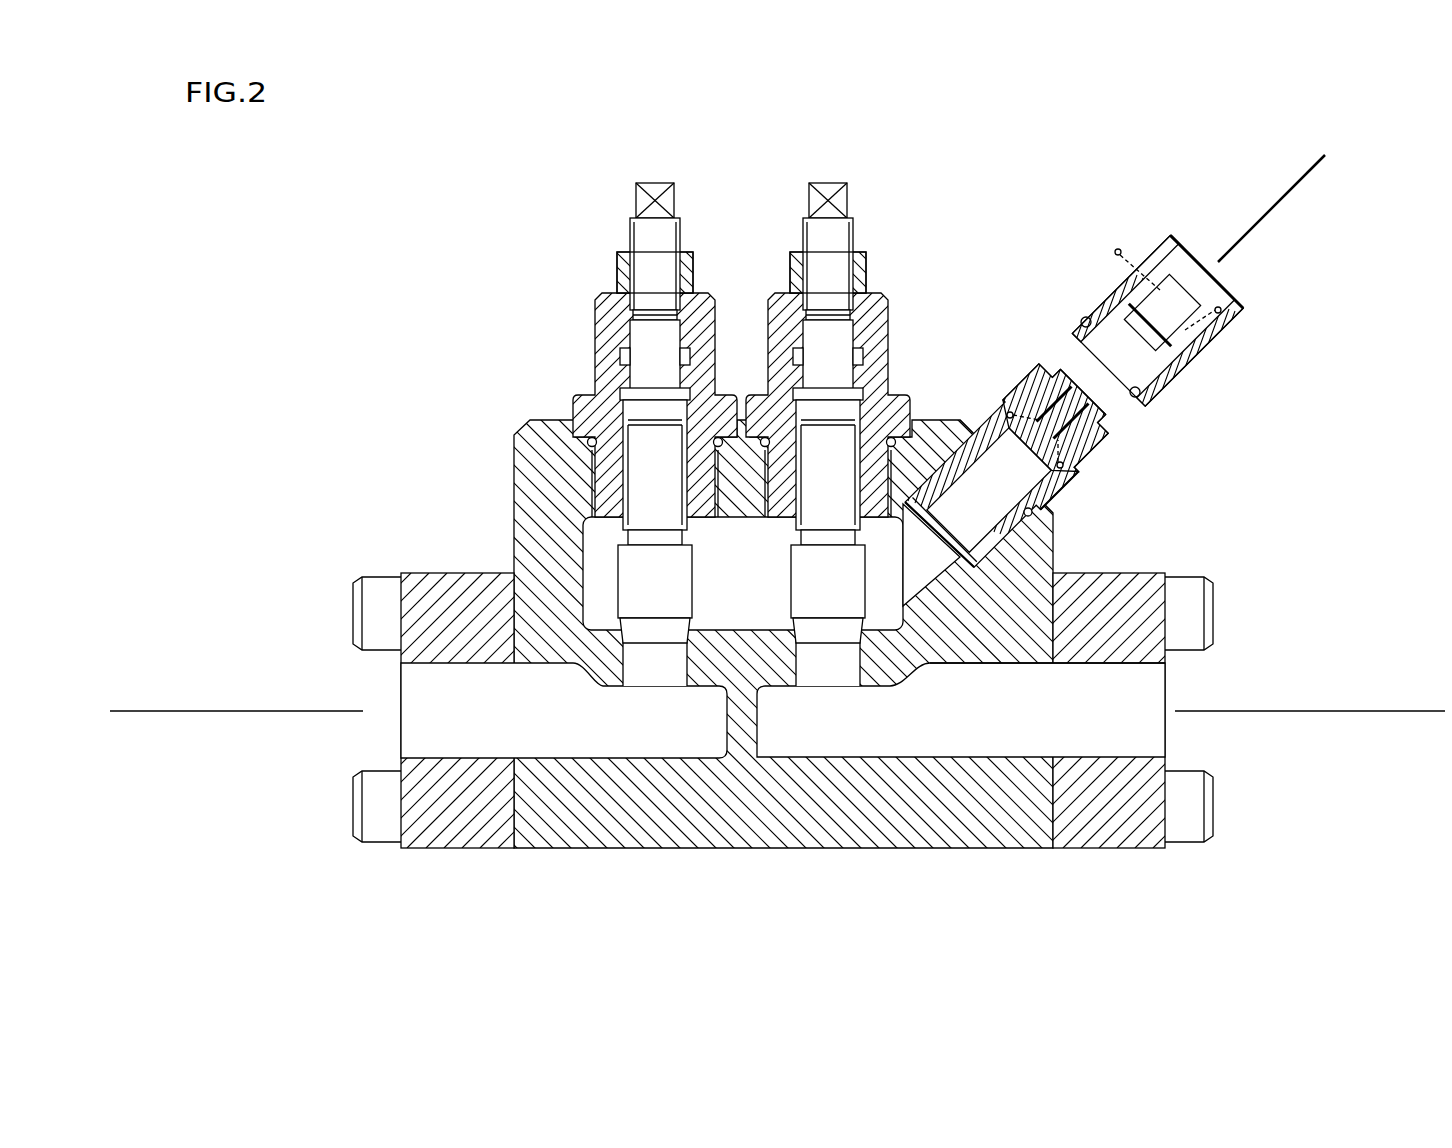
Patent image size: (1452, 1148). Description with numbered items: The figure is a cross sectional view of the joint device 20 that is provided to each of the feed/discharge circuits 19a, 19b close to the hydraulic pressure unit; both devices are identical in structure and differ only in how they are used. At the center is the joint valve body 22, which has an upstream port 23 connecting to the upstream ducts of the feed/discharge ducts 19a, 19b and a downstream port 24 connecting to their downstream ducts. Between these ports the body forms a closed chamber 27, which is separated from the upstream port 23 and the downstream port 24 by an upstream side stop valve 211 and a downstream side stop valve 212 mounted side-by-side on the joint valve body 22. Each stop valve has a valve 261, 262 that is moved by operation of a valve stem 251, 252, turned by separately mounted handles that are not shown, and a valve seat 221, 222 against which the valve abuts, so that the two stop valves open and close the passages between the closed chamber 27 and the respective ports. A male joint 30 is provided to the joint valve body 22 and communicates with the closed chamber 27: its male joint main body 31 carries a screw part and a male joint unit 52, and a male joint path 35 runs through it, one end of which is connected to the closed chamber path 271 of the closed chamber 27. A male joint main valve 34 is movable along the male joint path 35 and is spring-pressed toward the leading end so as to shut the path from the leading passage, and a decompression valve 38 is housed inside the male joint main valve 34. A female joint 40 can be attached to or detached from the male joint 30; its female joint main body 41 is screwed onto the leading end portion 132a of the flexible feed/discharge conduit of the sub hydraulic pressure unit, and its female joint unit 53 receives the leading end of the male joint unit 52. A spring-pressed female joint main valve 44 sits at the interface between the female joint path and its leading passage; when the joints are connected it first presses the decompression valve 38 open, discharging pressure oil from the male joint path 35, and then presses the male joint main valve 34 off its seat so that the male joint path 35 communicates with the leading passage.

The joint device 20 is at (768, 501).
The joint valve body 22 is at (742, 805).
The upstream port 23 is at (538, 717).
The downstream port 24 is at (1053, 792).
The valve seat 221 is at (727, 690).
The valve seat 222 is at (760, 692).
The valve 261 is at (633, 590).
The valve 262 is at (993, 730).
The closed chamber 27 is at (593, 578).
The closed chamber path 271 is at (927, 547).
The upstream side stop valve 211 is at (592, 293).
The downstream side stop valve 212 is at (877, 275).
The valve stem 251 is at (640, 258).
The valve stem 252 is at (838, 257).
The male joint path 35 is at (952, 500).
The male joint 30 is at (1051, 378).
The male joint main body 31 is at (1055, 512).
The male joint unit 52 is at (1043, 383).
The male joint main valve 34 is at (1090, 432).
The decompression valve 38 is at (1105, 420).
The female joint 40 is at (1163, 344).
The female joint main body 41 is at (1215, 335).
The female joint main valve 44 is at (1170, 345).
The female joint unit 53 is at (1075, 322).
The leading end portion of flexible feed/discharge conduit 132a is at (1290, 194).
The feed/discharge circuit 19a is at (268, 703).
The feed/discharge circuit 19b is at (1243, 712).